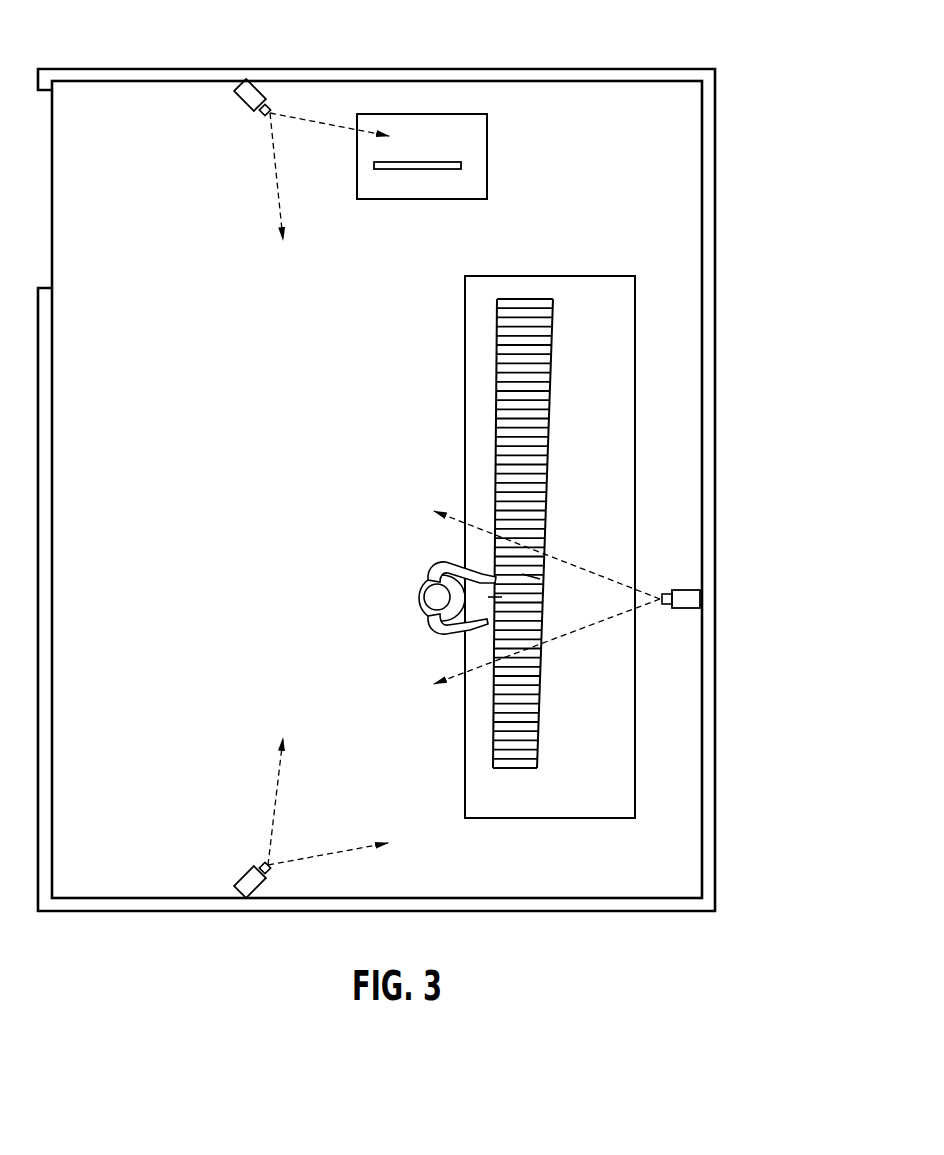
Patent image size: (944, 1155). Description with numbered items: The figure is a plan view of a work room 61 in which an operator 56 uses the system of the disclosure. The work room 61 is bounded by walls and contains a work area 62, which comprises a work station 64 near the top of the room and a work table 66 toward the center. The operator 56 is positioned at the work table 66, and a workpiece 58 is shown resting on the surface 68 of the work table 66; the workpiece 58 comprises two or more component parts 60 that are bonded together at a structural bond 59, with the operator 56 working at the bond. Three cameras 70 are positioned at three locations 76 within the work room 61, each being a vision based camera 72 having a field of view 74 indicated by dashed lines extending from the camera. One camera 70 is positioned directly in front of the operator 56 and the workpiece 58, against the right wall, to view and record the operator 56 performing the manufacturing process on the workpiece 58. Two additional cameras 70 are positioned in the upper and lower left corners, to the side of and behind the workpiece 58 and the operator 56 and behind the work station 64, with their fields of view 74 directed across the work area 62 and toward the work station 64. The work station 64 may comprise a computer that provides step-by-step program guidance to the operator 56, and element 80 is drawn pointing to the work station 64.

The operator 56 is at (402, 603).
The workpiece 58 is at (568, 363).
The structural bond 59 is at (522, 597).
The component parts 60 is at (505, 605).
The work room 61 is at (730, 311).
The work area 62 is at (389, 411).
The work station 64 is at (497, 103).
The work table 66 is at (482, 820).
The surface 68 is at (598, 791).
The cameras 70 is at (484, 483).
The vision based cameras 72 is at (245, 108).
The field of view 74 is at (315, 124).
The locations 76 is at (243, 83).
The work station display 80 is at (426, 152).